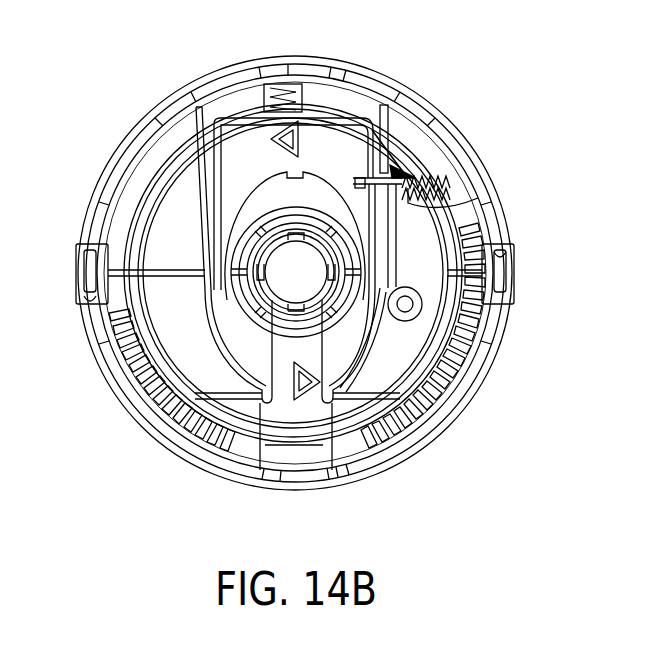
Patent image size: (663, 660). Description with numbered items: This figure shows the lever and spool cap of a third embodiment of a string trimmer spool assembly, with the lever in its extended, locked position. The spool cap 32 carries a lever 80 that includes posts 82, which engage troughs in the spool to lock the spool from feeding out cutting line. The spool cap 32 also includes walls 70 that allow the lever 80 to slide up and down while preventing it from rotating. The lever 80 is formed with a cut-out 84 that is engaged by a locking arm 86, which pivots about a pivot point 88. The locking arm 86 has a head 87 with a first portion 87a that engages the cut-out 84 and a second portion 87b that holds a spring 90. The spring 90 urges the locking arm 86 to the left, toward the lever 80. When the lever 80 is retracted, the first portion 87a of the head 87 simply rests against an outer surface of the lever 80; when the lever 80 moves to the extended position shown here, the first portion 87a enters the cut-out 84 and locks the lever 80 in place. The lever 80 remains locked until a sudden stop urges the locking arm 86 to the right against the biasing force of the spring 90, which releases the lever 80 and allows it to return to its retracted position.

The spool cap 32 is at (500, 348).
The walls 70 is at (262, 413).
The lever 80 is at (243, 153).
The posts 82 is at (287, 133).
The cut-out 84 is at (392, 108).
The locking arm 86 is at (390, 243).
The head 87 is at (397, 174).
The first portion 87a is at (350, 182).
The second portion 87b is at (445, 207).
The pivot point 88 is at (406, 313).
The spring 90 is at (455, 180).